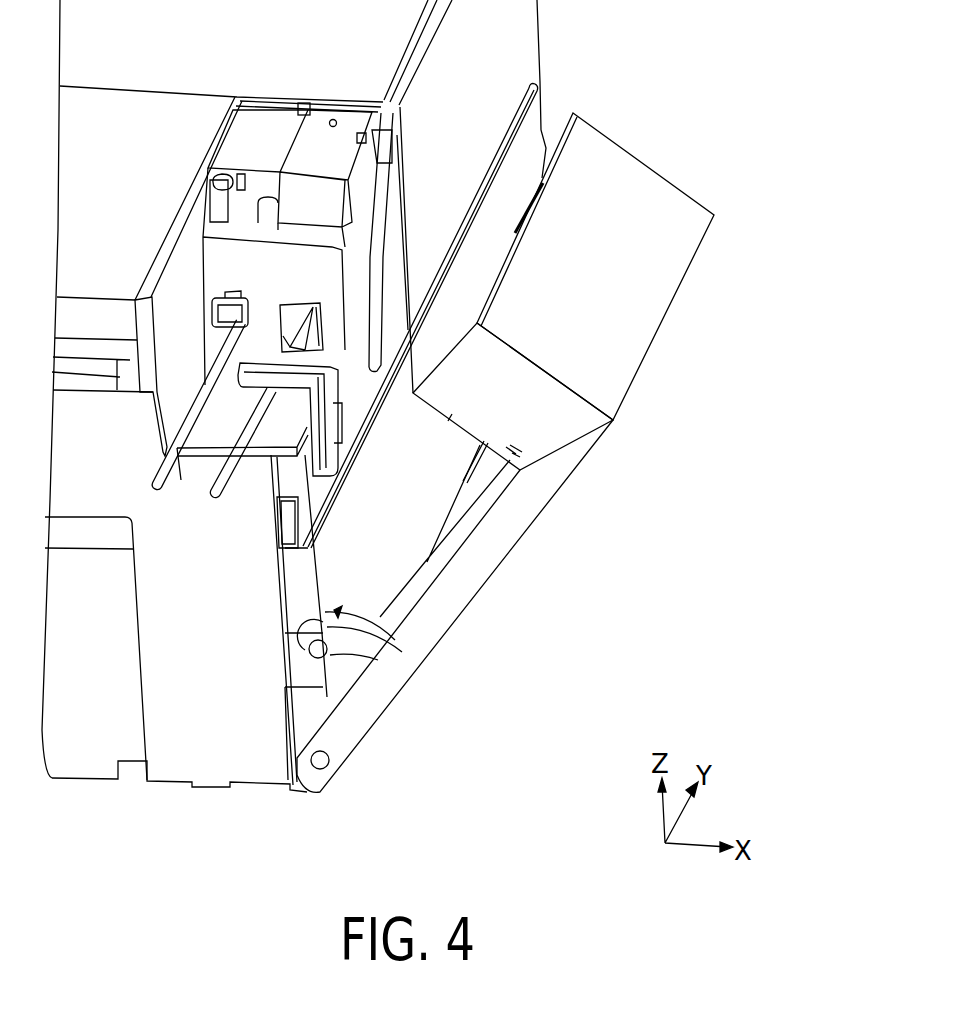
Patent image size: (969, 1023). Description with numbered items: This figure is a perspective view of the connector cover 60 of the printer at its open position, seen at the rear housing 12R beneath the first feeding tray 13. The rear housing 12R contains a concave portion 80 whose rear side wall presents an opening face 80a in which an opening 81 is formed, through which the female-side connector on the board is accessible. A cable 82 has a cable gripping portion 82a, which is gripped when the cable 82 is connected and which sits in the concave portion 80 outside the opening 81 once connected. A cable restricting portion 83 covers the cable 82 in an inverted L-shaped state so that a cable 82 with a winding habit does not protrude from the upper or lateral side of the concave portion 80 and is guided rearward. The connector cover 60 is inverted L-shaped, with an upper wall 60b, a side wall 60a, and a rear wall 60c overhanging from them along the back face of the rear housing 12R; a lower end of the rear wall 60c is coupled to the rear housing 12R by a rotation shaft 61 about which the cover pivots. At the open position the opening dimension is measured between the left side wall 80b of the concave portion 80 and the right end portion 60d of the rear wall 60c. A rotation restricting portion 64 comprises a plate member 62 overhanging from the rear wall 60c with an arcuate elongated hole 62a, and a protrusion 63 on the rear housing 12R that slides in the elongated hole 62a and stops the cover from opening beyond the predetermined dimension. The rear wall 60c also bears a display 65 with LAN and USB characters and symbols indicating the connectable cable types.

The first feeding tray 13 is at (152, 96).
The rear housing 12R is at (213, 747).
The concave portion 80 is at (184, 318).
The opening face 80a is at (380, 205).
The left side wall 80b is at (183, 353).
The opening 81 is at (320, 340).
The cable 82 is at (230, 470).
The cable gripping portion 82a is at (323, 330).
The cable restricting portion 83 is at (247, 383).
The connector cover 60 is at (540, 438).
The side wall 60a is at (477, 600).
The upper wall 60b is at (647, 297).
The rear wall 60c is at (503, 537).
The right end portion 60d is at (413, 393).
The rotation shaft 61 is at (330, 757).
The plate member 62 is at (362, 623).
The elongated hole 62a is at (360, 650).
The protrusion 63 is at (310, 632).
The rotation restricting portion 64 is at (403, 580).
The display 65 is at (540, 443).